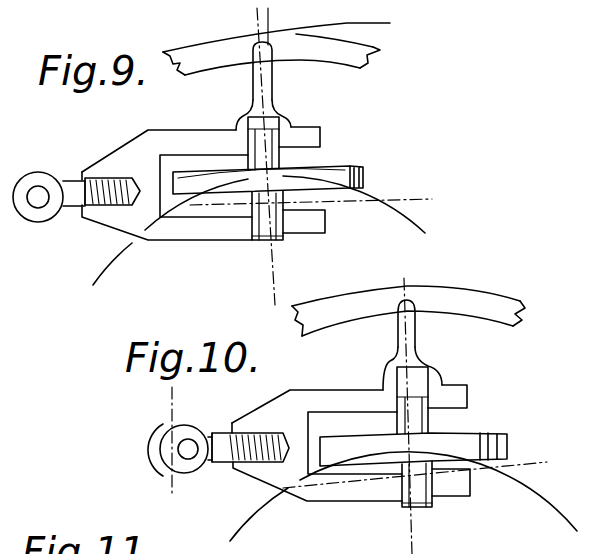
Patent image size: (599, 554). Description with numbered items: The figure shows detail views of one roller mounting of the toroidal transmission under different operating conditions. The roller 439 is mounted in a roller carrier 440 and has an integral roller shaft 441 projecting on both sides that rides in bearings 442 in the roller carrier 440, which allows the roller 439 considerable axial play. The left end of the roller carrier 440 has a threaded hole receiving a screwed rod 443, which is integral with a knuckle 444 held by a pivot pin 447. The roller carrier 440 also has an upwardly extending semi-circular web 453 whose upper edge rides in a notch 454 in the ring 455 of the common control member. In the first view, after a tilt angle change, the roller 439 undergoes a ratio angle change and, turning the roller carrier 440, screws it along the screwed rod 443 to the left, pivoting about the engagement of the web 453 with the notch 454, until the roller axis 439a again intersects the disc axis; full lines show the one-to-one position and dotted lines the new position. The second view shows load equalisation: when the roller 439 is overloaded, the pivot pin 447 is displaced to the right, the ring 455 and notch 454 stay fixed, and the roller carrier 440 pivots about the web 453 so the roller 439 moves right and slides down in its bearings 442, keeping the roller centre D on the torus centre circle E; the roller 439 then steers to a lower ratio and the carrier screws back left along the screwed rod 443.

In FIG. 9, the roller 439 is at (360, 166).
In FIG. 10, the roller 439 is at (343, 444).
In FIG. 9, the roller axis 439a is at (258, 143).
In FIG. 10, the roller axis 439a is at (420, 527).
In FIG. 9, the roller carrier 440 is at (135, 155).
In FIG. 10, the roller carrier 440 is at (277, 406).
In FIG. 9, the roller shaft 441 is at (290, 158).
In FIG. 10, the roller shaft 441 is at (432, 420).
In FIG. 9, the bearings 442 is at (283, 130).
In FIG. 10, the bearings 442 is at (430, 367).
In FIG. 9, the screwed rod 443 is at (65, 208).
In FIG. 10, the screwed rod 443 is at (213, 462).
In FIG. 9, the knuckle 444 is at (50, 178).
In FIG. 10, the knuckle 444 is at (187, 437).
In FIG. 9, the pivot pin 447 is at (35, 192).
In FIG. 10, the pivot pin 447 is at (182, 447).
In FIG. 9, the semi-circular web 453 is at (268, 74).
In FIG. 10, the semi-circular web 453 is at (417, 333).
In FIG. 9, the notch 454 is at (304, 43).
In FIG. 10, the notch 454 is at (412, 297).
In FIG. 9, the ring 455 is at (343, 53).
In FIG. 10, the ring 455 is at (440, 304).
In FIG. 9, the roller centre D is at (259, 230).
In FIG. 10, the roller centre D is at (430, 441).
In FIG. 9, the torus centre circle E is at (323, 203).
In FIG. 10, the torus centre circle E is at (425, 469).